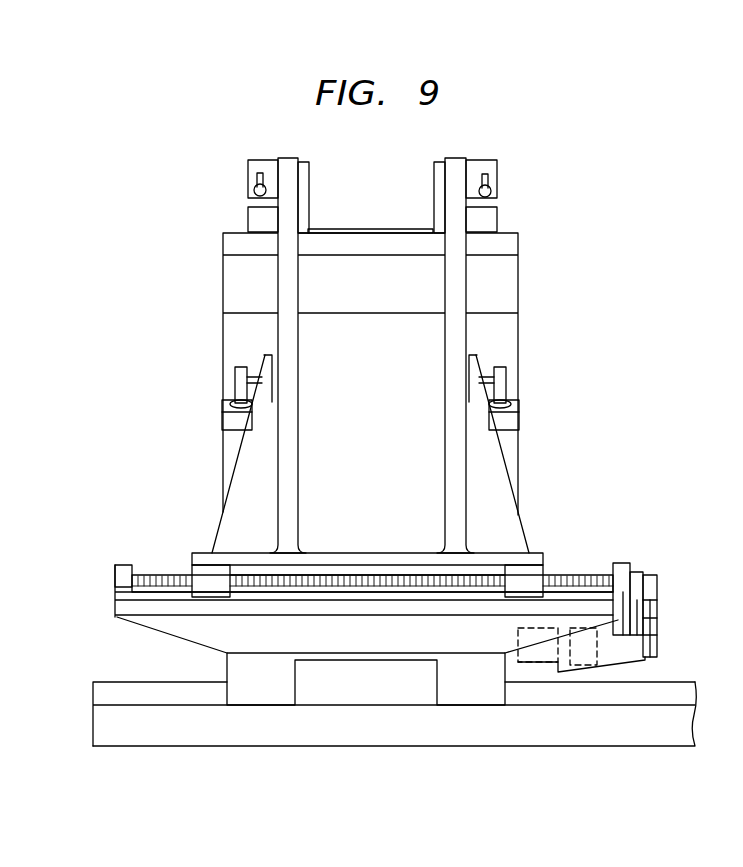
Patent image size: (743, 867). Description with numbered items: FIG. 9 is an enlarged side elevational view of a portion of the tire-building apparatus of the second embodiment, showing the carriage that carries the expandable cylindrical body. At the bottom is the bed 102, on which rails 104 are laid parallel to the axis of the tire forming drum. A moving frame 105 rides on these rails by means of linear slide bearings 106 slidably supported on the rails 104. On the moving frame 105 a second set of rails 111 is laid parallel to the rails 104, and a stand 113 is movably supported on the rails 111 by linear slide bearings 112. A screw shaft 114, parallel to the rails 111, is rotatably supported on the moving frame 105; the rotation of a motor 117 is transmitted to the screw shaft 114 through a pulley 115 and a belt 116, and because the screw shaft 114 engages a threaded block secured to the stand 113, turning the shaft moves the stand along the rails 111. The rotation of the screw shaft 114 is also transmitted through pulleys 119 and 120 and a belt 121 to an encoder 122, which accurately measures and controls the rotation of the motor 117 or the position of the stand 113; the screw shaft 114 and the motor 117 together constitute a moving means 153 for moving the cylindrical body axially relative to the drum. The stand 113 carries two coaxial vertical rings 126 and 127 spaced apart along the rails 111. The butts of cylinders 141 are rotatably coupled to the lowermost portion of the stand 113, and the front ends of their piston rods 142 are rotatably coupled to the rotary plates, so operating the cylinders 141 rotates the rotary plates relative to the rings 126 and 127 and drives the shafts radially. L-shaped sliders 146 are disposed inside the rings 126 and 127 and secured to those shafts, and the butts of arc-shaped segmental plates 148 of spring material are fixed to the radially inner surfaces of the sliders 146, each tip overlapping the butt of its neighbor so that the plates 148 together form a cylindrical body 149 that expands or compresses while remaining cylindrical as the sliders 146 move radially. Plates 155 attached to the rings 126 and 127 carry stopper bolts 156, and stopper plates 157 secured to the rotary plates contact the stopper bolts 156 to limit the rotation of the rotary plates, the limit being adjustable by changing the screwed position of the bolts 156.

The bed 102 is at (219, 747).
The rails 104 is at (114, 690).
The moving frame 105 is at (184, 631).
The linear slide bearings 106 is at (237, 668).
The rails 111 is at (562, 598).
The linear slide bearings 112 is at (530, 588).
The stand 113 is at (212, 522).
The screw shaft 114 is at (595, 575).
The pulley 115 is at (640, 577).
The belt 116 is at (657, 621).
The motor 117 is at (587, 665).
The pulley 119 is at (658, 582).
The pulley 120 is at (658, 652).
The belt 121 is at (657, 608).
The encoder 122 is at (535, 665).
The vertical ring 126 is at (295, 291).
The vertical ring 127 is at (450, 291).
The cylinders 141 is at (222, 450).
The piston rods 142 is at (240, 393).
The L-shaped sliders 146 is at (310, 198).
The segmental plates 148 is at (510, 266).
The cylindrical body 149 is at (524, 299).
The moving means 153 is at (633, 672).
The plates 155 is at (498, 166).
The stopper bolts 156 is at (497, 192).
The stopper plates 157 is at (498, 221).